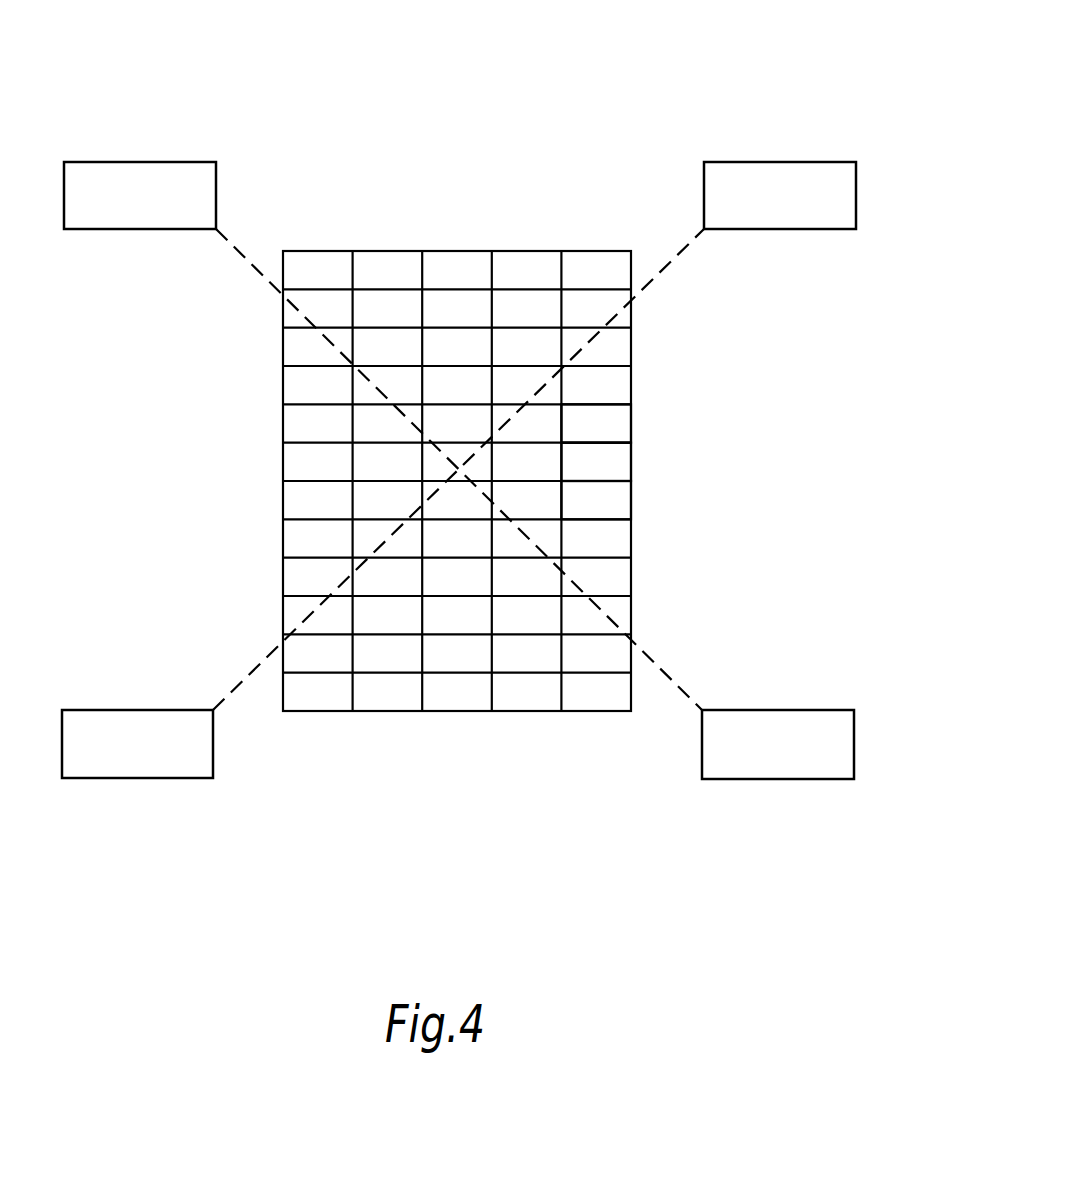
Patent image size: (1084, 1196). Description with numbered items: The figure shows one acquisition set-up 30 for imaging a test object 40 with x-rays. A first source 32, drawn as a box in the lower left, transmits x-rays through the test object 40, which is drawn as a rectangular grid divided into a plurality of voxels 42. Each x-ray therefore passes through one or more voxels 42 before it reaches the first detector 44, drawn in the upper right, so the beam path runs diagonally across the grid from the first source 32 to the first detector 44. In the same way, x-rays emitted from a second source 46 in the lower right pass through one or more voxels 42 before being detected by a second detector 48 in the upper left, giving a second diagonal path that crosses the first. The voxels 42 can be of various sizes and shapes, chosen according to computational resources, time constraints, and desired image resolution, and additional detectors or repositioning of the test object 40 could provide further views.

The acquisition set-up 30 is at (699, 48).
The first source 32 is at (90, 708).
The test object 40 is at (262, 485).
The voxels 42 is at (619, 424).
The first detector 44 is at (835, 160).
The second source 46 is at (833, 708).
The second detector 48 is at (90, 160).